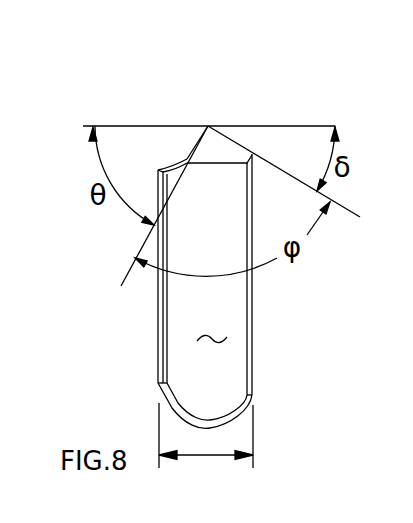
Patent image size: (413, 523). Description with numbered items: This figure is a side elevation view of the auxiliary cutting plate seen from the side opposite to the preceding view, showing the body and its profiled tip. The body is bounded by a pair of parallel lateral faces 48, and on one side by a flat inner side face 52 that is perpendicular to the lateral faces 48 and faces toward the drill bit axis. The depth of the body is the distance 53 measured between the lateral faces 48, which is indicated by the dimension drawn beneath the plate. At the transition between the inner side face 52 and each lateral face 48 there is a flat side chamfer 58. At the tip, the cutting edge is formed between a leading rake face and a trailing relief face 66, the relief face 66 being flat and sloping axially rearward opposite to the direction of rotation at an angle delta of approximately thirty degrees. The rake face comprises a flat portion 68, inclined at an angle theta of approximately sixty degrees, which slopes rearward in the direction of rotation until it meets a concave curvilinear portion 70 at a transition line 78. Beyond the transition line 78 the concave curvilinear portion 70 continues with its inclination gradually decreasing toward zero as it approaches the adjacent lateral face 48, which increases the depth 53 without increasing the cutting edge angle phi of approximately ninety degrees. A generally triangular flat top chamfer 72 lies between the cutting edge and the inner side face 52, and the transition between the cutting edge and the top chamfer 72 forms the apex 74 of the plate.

The lateral faces 48 is at (158, 313).
The inner side face 52 is at (197, 278).
The distance (depth of the body) 53 is at (206, 445).
The flat side chamfer 58 is at (158, 370).
The relief face 66 is at (230, 140).
The flat portion of the rake face 68 is at (188, 162).
The concave curvilinear portion 70 is at (174, 167).
The top chamfer 72 is at (219, 148).
The apex 74 is at (187, 160).
The transition line 78 is at (188, 162).